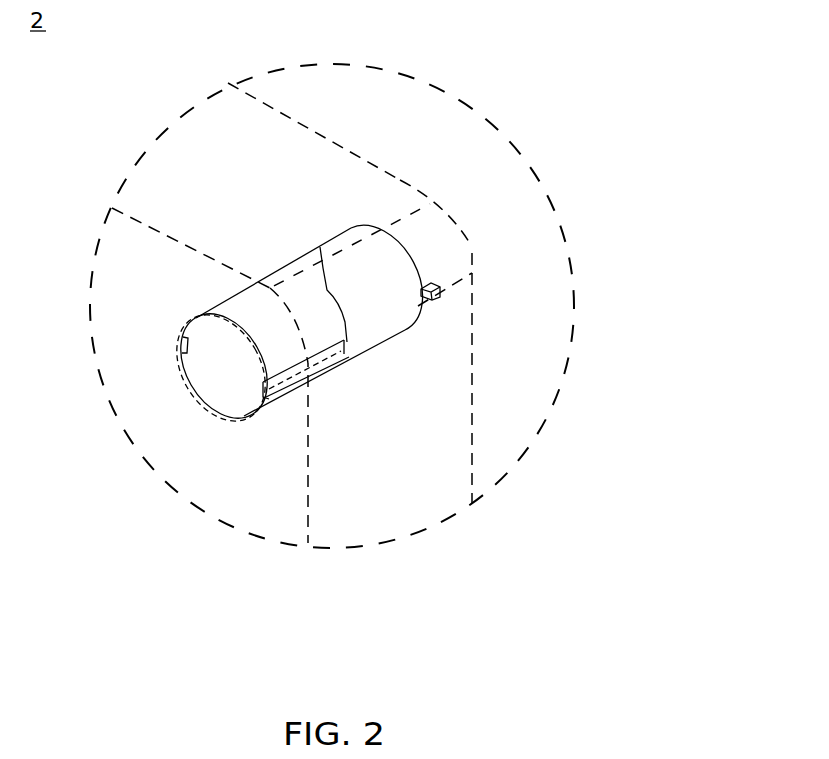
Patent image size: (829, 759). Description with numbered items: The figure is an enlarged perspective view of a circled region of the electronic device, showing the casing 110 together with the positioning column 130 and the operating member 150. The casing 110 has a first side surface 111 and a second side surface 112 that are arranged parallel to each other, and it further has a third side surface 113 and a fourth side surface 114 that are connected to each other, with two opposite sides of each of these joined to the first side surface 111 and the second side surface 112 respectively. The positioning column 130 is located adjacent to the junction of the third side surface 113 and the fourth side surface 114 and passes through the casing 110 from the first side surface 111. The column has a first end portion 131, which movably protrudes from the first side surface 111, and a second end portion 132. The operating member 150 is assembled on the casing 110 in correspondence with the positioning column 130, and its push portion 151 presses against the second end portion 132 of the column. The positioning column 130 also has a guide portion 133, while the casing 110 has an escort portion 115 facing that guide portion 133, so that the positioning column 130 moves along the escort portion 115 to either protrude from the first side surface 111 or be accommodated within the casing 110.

The casing 110 is at (176, 150).
The first side surface 111 is at (113, 302).
The second side surface 112 is at (400, 177).
The third side surface 113 is at (278, 135).
The fourth side surface 114 is at (420, 423).
The escort portion 115 is at (280, 401).
The positioning column 130 is at (334, 412).
The first end portion 131 is at (223, 390).
The second end portion 132 is at (307, 282).
The guide portion 133 is at (255, 393).
The operating member 150 is at (388, 273).
The push portion 151 is at (350, 305).